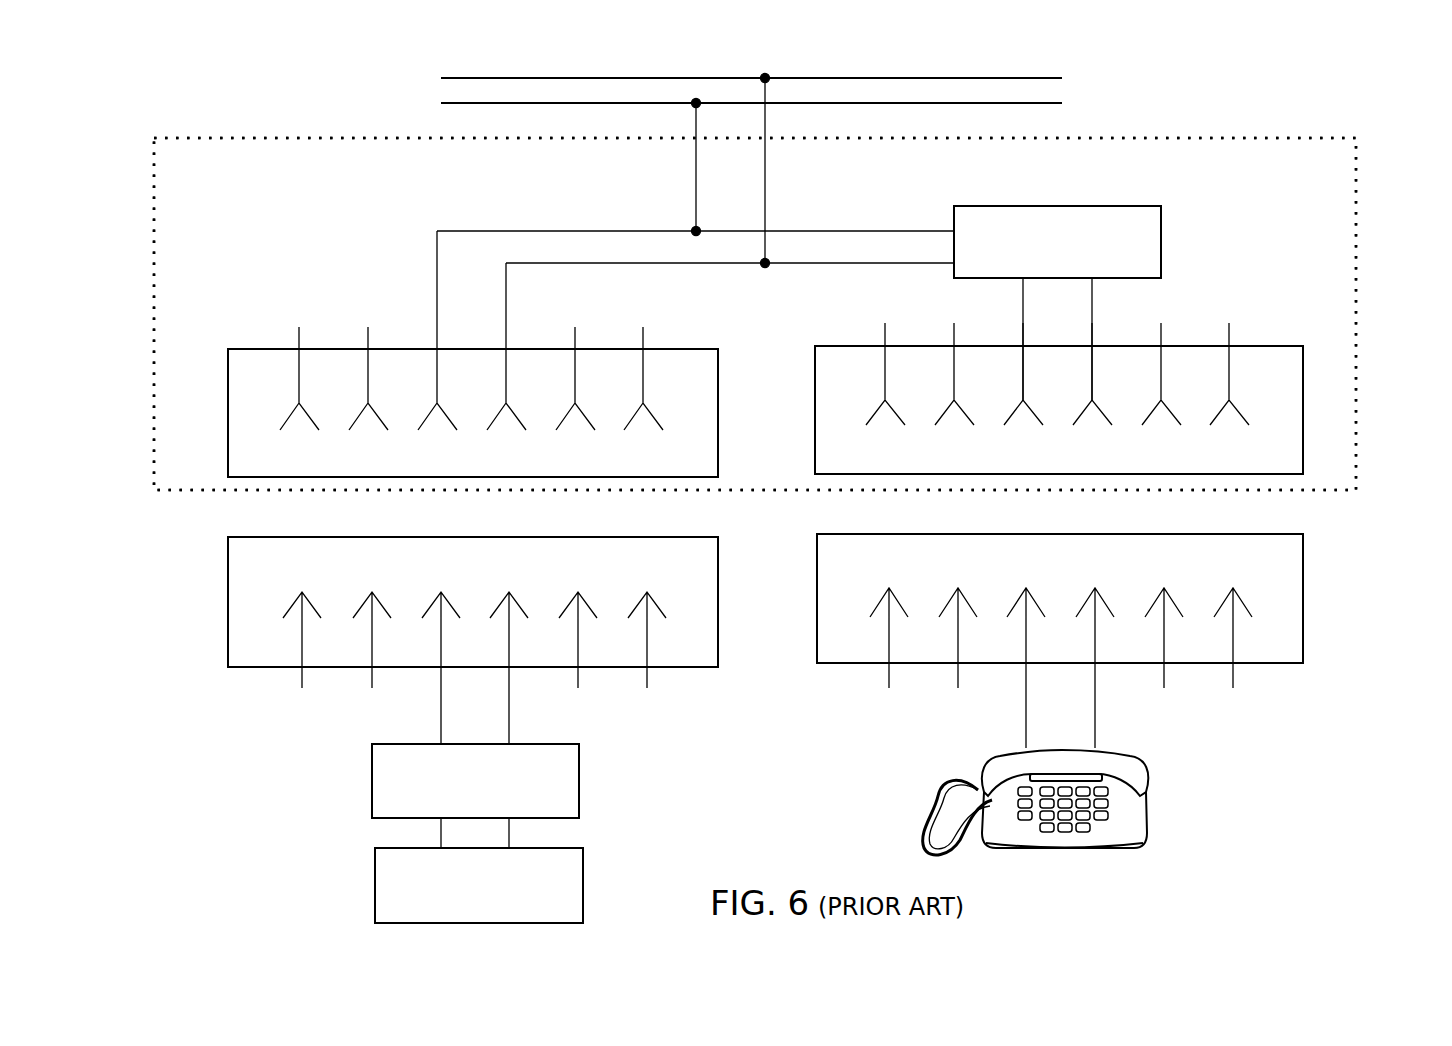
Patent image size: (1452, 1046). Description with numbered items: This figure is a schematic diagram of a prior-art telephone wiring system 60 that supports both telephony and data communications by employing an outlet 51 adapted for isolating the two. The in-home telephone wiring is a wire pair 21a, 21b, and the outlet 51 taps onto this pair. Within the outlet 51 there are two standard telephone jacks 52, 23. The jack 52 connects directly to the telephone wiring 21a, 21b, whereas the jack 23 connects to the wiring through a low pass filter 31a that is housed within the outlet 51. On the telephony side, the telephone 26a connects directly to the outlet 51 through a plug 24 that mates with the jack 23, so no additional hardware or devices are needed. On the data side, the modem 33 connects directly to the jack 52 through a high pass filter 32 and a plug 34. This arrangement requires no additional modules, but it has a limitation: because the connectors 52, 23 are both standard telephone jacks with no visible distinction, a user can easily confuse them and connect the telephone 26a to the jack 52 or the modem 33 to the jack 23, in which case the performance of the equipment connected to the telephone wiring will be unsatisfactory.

The wire pair 21a is at (995, 78).
The wire pair 21b is at (1035, 103).
The telephone wiring system 60 is at (1321, 127).
The outlet 51 is at (1356, 312).
The low pass filter 31a is at (1161, 238).
The RJ-11 telephone jack 52 is at (228, 413).
The RJ-11 telephone jack 23 is at (815, 408).
The plug 34 is at (228, 585).
The plug 24 is at (817, 598).
The high pass filter 32 is at (372, 781).
The modem 33 is at (375, 884).
The telephone set 26a is at (1147, 815).